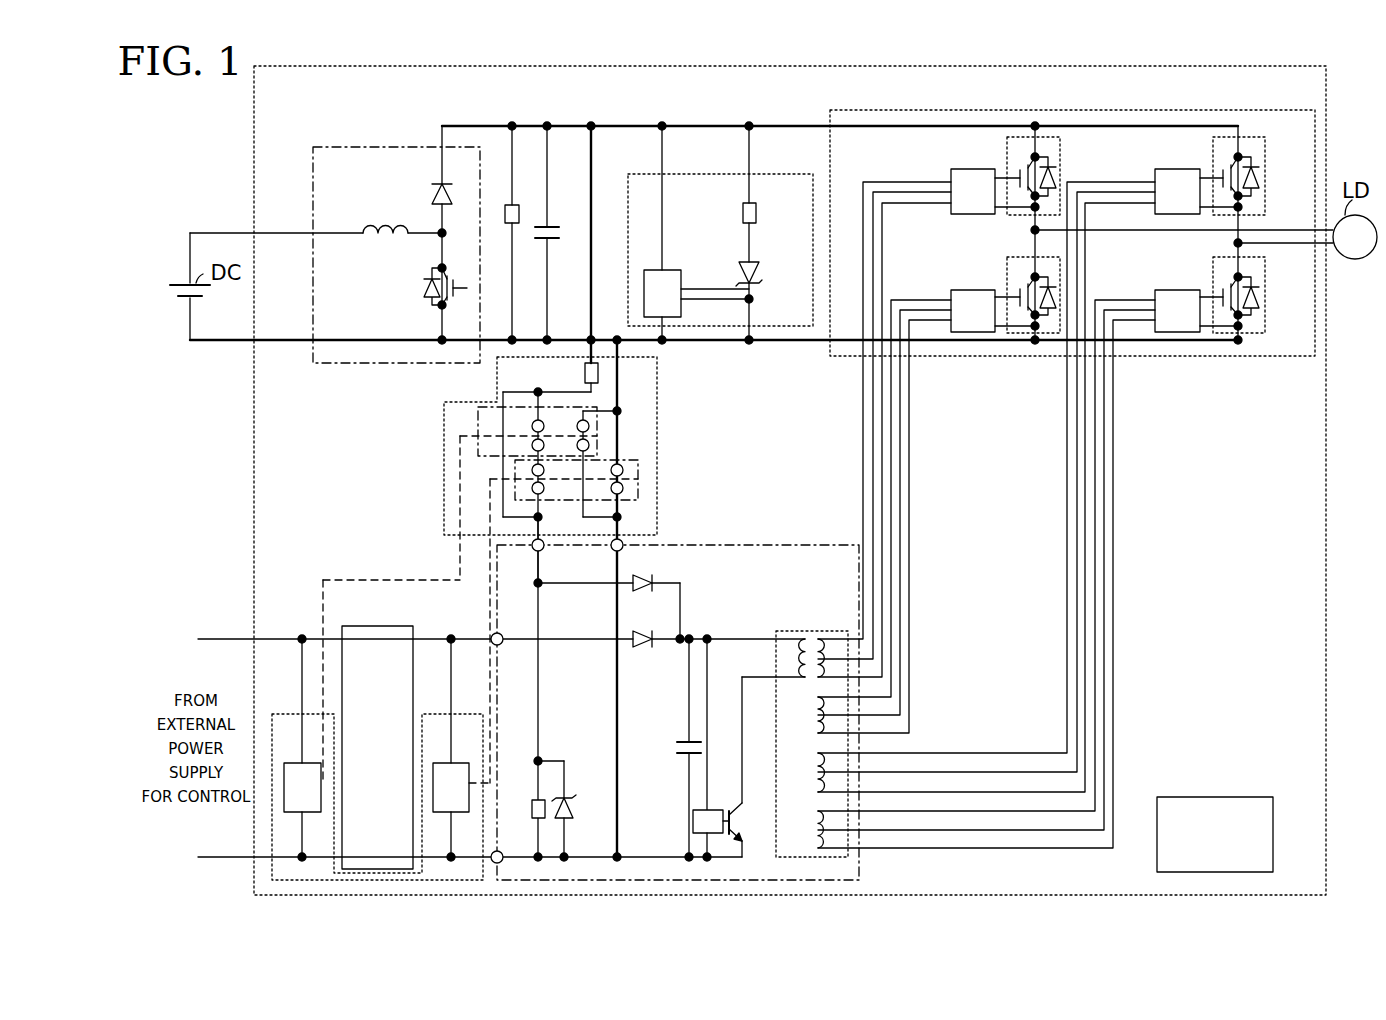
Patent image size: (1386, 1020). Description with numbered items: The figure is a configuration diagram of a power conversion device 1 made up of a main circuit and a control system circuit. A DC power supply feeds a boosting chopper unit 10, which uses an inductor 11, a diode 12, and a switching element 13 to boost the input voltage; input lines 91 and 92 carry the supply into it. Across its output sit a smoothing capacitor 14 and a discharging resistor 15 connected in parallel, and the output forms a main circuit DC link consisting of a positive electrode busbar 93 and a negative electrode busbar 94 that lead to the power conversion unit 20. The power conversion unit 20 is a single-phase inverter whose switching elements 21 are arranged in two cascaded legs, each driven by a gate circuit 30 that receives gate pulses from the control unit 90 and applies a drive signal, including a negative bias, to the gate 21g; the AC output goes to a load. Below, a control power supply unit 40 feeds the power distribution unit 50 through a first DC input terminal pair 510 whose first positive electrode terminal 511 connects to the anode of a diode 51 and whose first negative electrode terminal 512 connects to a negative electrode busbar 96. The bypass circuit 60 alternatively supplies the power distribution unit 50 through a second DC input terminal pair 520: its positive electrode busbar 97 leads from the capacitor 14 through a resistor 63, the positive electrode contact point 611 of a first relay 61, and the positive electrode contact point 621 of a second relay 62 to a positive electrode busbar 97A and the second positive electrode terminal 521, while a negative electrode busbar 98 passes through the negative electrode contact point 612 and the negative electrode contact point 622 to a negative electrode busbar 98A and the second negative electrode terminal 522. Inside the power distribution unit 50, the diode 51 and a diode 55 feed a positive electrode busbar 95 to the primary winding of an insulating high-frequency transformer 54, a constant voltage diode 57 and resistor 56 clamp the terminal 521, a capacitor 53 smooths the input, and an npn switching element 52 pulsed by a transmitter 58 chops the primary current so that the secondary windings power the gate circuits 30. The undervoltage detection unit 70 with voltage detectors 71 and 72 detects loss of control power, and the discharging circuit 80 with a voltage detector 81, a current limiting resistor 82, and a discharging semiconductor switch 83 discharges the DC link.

The power conversion device 1 is at (254, 100).
The boosting chopper unit 10 is at (352, 147).
The inductor 11 is at (386, 224).
The diode 12 is at (446, 194).
The switching element 13 is at (422, 288).
The capacitor 14 is at (548, 226).
The discharging resistor 15 is at (512, 205).
The power conversion unit 20 is at (1270, 110).
The switching element 21 is at (1060, 152).
The gate 21g is at (1015, 172).
The gate circuit 30 is at (965, 169).
The control power supply unit 40 is at (386, 626).
The power distribution unit 50 is at (775, 545).
The diode 51 is at (645, 641).
The switching element 52 is at (741, 800).
The capacitor 53 is at (684, 740).
The insulating high-frequency transformer 54 is at (810, 631).
The diode 55 is at (646, 581).
The resistor 56 is at (533, 802).
The constant voltage diode 57 is at (564, 792).
The transmitter 58 is at (693, 821).
The bypass circuit 60 is at (444, 493).
The first relay 61 is at (518, 592).
The positive electrode contact point 611 is at (532, 428).
The negative electrode contact point 612 is at (590, 427).
The second relay 62 is at (547, 618).
The positive electrode contact point 621 is at (532, 470).
The negative electrode contact point 622 is at (624, 470).
The resistor 63 is at (585, 374).
The undervoltage detection unit 70 is at (314, 880).
The voltage detector 71 is at (302, 762).
The voltage detector 72 is at (451, 762).
The discharging circuit 80 is at (770, 174).
The voltage detector 81 is at (670, 270).
The current limiting resistor 82 is at (757, 213).
The discharging semiconductor switch 83 is at (759, 273).
The control unit 90 is at (1226, 797).
The positive input line 91 is at (347, 234).
The negative input line 92 is at (347, 339).
The positive electrode busbar 93 is at (604, 126).
The negative electrode busbar 94 is at (617, 338).
The positive electrode busbar 95 is at (735, 639).
The negative electrode busbar 96 is at (595, 856).
The positive electrode busbar 97 is at (591, 252).
The positive electrode busbar 97A is at (536, 528).
The negative electrode busbar 98 is at (618, 405).
The negative electrode busbar 98A is at (619, 530).
The first DC input terminal pair 510 is at (561, 794).
The first positive electrode terminal 511 is at (500, 646).
The first negative electrode terminal 512 is at (497, 864).
The second DC input terminal pair 520 is at (464, 556).
The second positive electrode terminal 521 is at (534, 550).
The second negative electrode terminal 522 is at (613, 550).